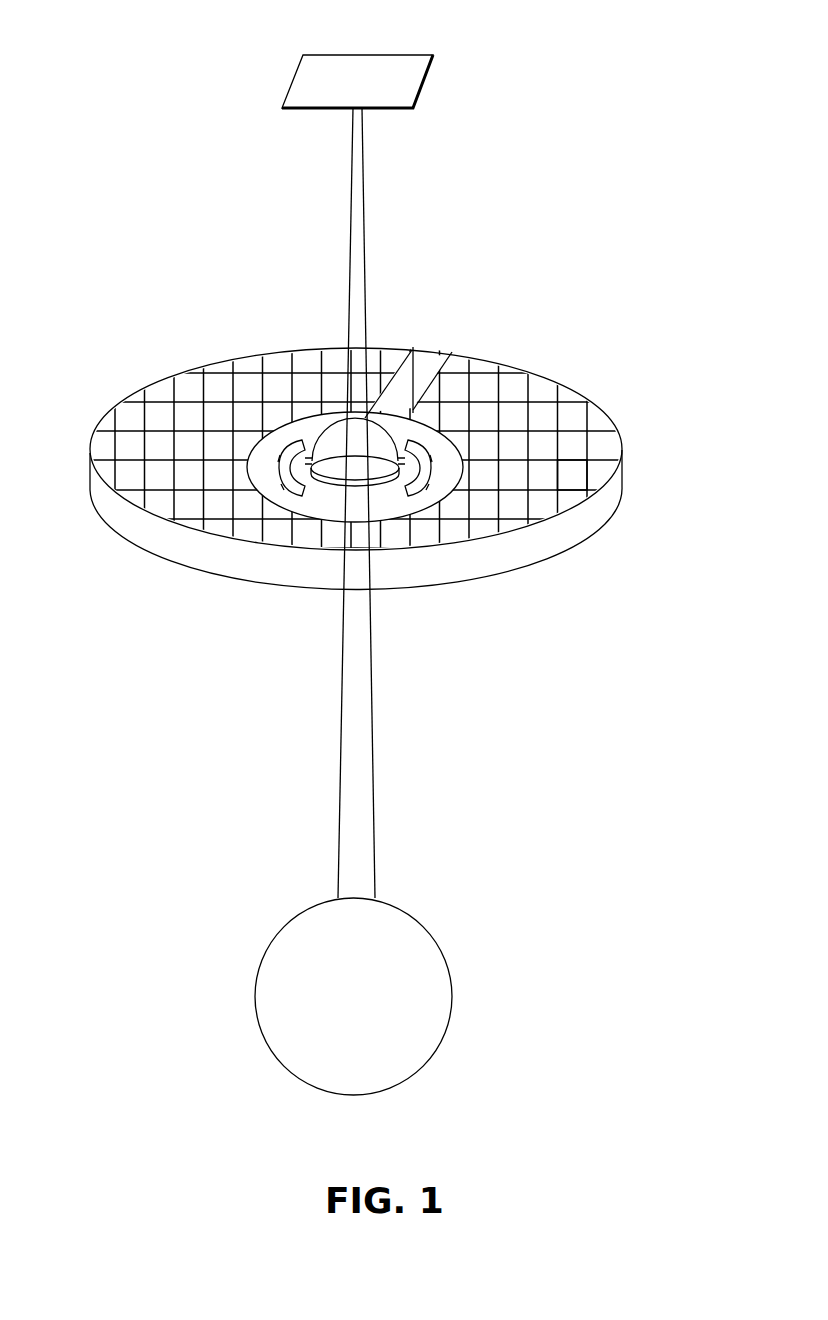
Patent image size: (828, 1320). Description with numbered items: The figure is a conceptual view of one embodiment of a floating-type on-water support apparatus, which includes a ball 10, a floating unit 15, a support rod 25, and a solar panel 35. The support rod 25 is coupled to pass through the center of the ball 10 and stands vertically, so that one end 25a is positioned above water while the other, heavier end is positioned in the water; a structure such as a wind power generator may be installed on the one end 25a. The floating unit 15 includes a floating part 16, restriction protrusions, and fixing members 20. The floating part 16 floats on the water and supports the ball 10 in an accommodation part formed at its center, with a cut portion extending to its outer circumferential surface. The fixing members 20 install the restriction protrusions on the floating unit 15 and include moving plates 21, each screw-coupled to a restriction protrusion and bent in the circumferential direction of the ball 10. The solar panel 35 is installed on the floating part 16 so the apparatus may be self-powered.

The one end of the support rod 25a is at (372, 80).
The support rod 25 is at (363, 263).
The ball 10 is at (416, 418).
The fixing members 20 is at (443, 455).
The solar panel 35 is at (548, 380).
The floating unit 15 is at (612, 436).
The moving plate 21 is at (583, 470).
The floating part 16 is at (527, 563).